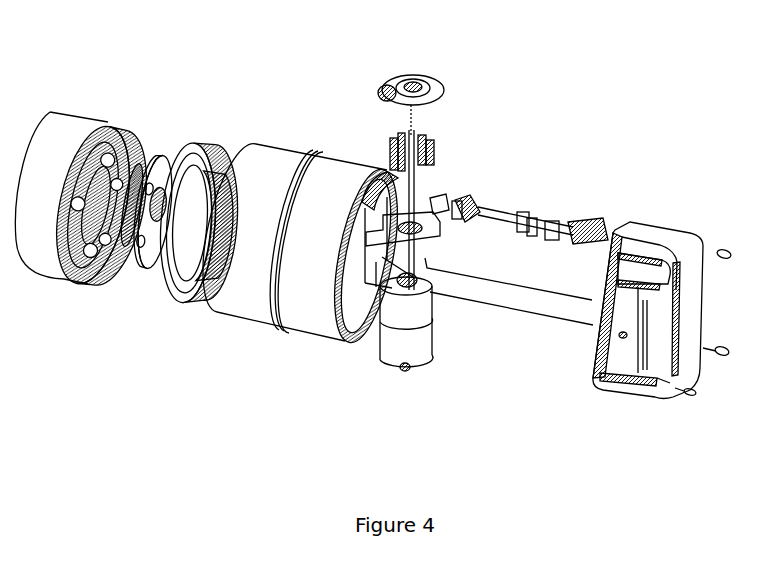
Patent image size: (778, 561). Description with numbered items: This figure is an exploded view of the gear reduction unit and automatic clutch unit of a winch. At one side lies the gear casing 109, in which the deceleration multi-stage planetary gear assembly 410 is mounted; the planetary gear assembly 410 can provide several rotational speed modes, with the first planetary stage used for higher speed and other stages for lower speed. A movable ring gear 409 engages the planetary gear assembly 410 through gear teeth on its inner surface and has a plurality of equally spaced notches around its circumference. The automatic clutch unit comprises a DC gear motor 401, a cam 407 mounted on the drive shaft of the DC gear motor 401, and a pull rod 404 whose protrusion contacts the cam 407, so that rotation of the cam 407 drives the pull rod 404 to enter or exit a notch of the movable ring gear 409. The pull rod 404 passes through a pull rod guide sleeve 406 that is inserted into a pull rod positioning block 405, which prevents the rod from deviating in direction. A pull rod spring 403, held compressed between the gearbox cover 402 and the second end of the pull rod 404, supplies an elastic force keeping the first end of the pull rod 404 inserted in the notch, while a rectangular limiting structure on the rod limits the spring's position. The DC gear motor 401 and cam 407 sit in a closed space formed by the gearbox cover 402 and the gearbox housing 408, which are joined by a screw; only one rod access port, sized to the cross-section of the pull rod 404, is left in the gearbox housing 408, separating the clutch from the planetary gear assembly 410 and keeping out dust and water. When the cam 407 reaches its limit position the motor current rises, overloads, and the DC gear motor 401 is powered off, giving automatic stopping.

The gear casing 109 is at (96, 218).
The DC gear motor 401 is at (428, 340).
The gearbox cover 402 is at (657, 222).
The pull rod spring 403 is at (597, 222).
The pull rod 404 is at (528, 215).
The pull rod positioning block 405 is at (475, 197).
The pull rod guide sleeve 406 is at (437, 192).
The cam 407 is at (384, 87).
The gearbox housing 408 is at (297, 143).
The movable ring gear 409 is at (197, 143).
The planetary gear assembly 410 is at (128, 134).